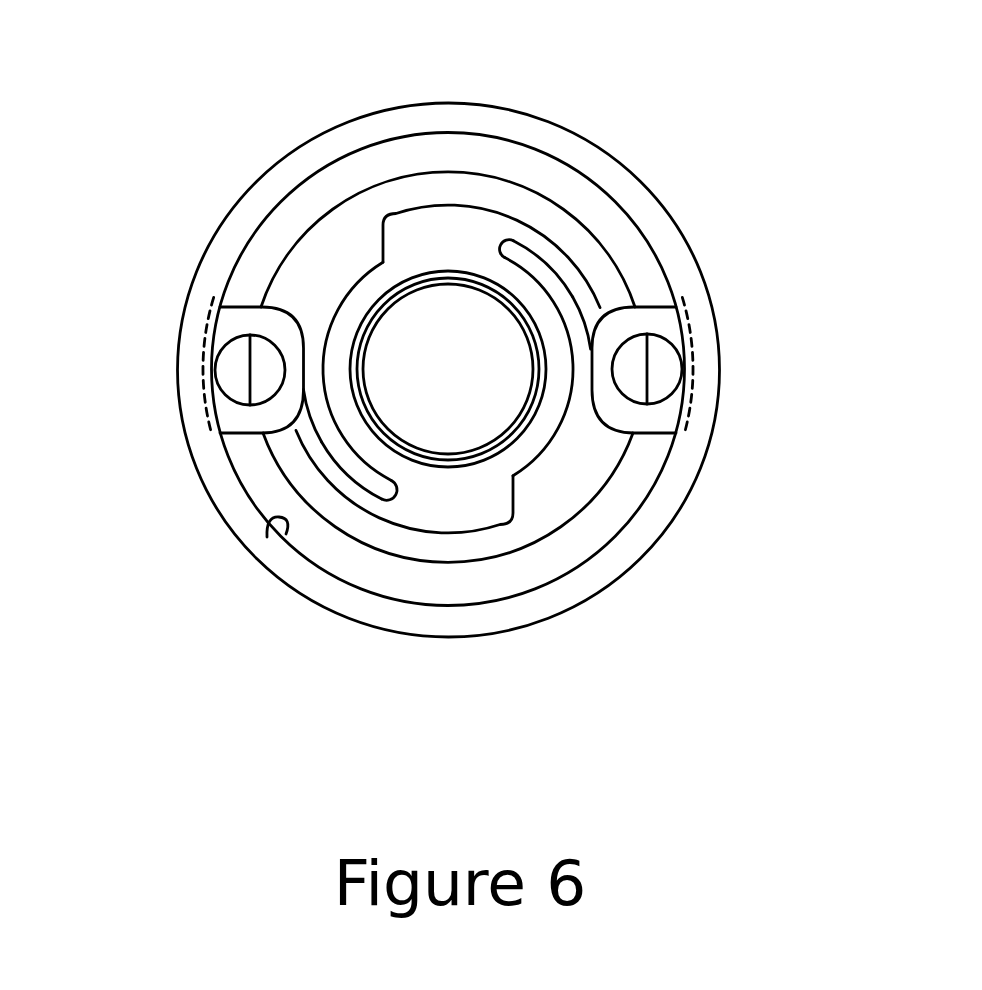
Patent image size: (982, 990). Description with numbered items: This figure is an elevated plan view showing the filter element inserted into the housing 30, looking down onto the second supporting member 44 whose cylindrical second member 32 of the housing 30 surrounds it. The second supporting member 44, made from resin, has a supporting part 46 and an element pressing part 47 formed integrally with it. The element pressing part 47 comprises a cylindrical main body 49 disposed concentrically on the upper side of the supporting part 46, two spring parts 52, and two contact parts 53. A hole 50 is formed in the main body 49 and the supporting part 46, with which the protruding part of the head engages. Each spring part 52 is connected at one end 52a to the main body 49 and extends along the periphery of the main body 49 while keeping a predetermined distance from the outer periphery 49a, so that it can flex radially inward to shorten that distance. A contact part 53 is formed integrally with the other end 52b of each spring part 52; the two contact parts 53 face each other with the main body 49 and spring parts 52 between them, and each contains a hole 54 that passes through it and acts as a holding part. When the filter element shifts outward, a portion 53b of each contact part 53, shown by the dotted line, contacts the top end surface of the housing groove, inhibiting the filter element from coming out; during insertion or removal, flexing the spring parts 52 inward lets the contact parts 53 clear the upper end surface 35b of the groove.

The housing 30 is at (640, 155).
The second member 32 is at (678, 214).
The upper end surface of the groove 35b is at (284, 532).
The second supporting member 44 is at (576, 520).
The supporting part 46 is at (477, 547).
The element pressing part 47 is at (365, 275).
The main body 49 is at (540, 428).
The outer periphery of the main body 49a is at (499, 266).
The hole 50 is at (437, 327).
The spring part 52 is at (578, 282).
The one end of the spring part 52a is at (521, 238).
The other end of the spring part 52b is at (598, 297).
The contact part 53 is at (223, 322).
The portion of the contact part 53b is at (202, 395).
The hole 54 is at (232, 368).